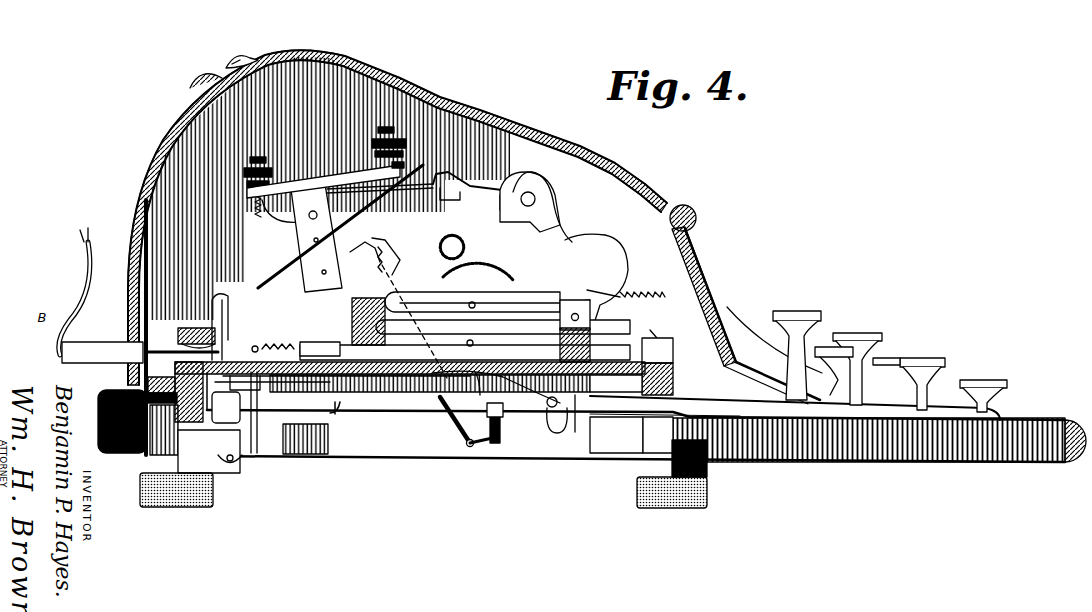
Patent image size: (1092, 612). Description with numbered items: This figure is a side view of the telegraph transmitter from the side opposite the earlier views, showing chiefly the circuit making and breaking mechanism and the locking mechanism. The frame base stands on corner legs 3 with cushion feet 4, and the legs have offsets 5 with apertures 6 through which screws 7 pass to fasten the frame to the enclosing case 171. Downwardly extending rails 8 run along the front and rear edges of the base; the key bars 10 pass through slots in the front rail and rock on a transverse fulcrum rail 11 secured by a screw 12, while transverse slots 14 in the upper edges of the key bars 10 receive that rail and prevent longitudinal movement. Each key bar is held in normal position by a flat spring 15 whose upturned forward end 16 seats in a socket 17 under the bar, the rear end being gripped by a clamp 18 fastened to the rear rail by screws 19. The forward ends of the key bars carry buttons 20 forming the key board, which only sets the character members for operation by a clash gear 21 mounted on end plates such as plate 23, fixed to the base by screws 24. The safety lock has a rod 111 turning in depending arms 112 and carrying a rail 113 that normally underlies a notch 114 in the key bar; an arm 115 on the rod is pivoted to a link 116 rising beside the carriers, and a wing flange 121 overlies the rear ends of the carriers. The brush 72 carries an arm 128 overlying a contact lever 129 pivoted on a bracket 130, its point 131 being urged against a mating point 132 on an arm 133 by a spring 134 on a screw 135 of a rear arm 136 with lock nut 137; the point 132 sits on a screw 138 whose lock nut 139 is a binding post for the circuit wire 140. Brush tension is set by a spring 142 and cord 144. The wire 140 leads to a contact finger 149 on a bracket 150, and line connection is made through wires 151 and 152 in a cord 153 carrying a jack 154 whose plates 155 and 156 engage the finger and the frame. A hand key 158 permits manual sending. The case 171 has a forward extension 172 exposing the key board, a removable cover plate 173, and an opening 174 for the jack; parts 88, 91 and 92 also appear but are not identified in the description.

The corner legs 3 is at (254, 445).
The cushion feet 4 is at (190, 475).
The offsets 5 is at (168, 490).
The apertures 6 is at (240, 462).
The screws 7 is at (232, 470).
The rails 8 is at (212, 497).
The key bars 10 is at (802, 348).
The rail 11 is at (262, 430).
The screw 12 is at (670, 358).
The transverse slots 14 is at (290, 420).
The springs 15 is at (336, 414).
The upturned forward ends 16 is at (352, 414).
The sockets 17 is at (372, 416).
The clamp 18 is at (165, 420).
The screws 19 is at (130, 450).
The buttons 20 is at (797, 315).
The clash gear 21 is at (497, 232).
The end plate 23 is at (580, 254).
The screws 24 is at (655, 325).
The brush 72 is at (520, 196).
The link 88 is at (578, 430).
The loop 91 is at (560, 433).
The pin 92 is at (549, 407).
The rod 111 is at (500, 445).
The arms 112 is at (510, 385).
The rail 113 is at (494, 444).
The notch 114 is at (506, 398).
The arm 115 is at (482, 440).
The link 116 is at (455, 432).
The flange 121 is at (432, 183).
The arm 128 is at (470, 196).
The contact lever 129 is at (442, 200).
The bracket 130 is at (288, 186).
The point 131 is at (392, 184).
The mating point 132 is at (397, 176).
The arm 133 is at (392, 138).
The spring 134 is at (246, 206).
The screw 135 is at (256, 180).
The rear arm 136 is at (268, 172).
The lock nut 137 is at (250, 192).
The screw 138 is at (316, 235).
The lock nut 139 is at (400, 150).
The circuit wire 140 is at (382, 125).
The spring 142 is at (556, 186).
The cord or wire 144 is at (490, 256).
The contact finger 149 is at (84, 295).
The bracket 150 is at (144, 246).
The circuit wire 151 is at (92, 238).
The circuit wire 152 is at (86, 243).
The cord 153 is at (84, 247).
The jack 154 is at (95, 348).
The plate 155 is at (185, 337).
The plate 156 is at (176, 380).
The hand key 158 is at (880, 358).
The case 171 is at (708, 272).
The forward extension 172 is at (1017, 410).
The removable cover plate 173 is at (258, 58).
The opening 174 is at (142, 343).